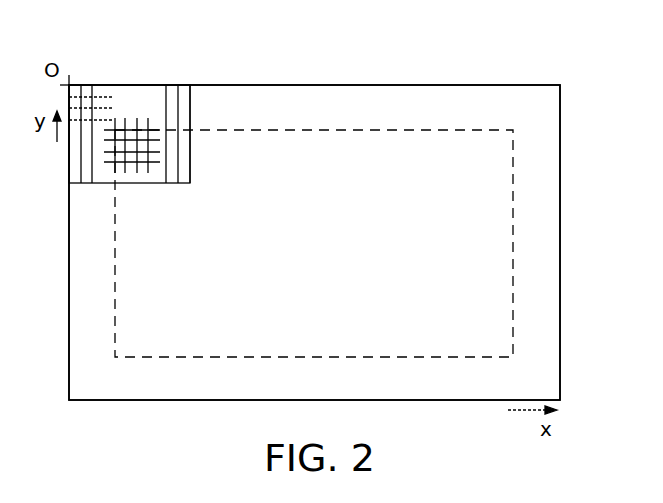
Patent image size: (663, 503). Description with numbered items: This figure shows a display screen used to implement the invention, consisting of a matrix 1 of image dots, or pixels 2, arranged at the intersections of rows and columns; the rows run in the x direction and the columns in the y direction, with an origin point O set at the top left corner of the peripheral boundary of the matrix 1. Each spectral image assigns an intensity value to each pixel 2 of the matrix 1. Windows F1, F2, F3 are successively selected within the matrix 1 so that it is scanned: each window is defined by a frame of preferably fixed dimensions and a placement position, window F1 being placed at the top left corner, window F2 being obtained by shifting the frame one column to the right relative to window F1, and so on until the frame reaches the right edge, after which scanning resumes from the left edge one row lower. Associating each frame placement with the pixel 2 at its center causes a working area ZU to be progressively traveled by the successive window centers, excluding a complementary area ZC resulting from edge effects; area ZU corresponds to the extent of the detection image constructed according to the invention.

The matrix 1 is at (68, 334).
The pixel 2 is at (120, 130).
The first window F1 is at (167, 102).
The second window F2 is at (179, 155).
The third window F3 is at (190, 108).
The complementary area ZC is at (314, 242).
The working area ZU is at (314, 243).